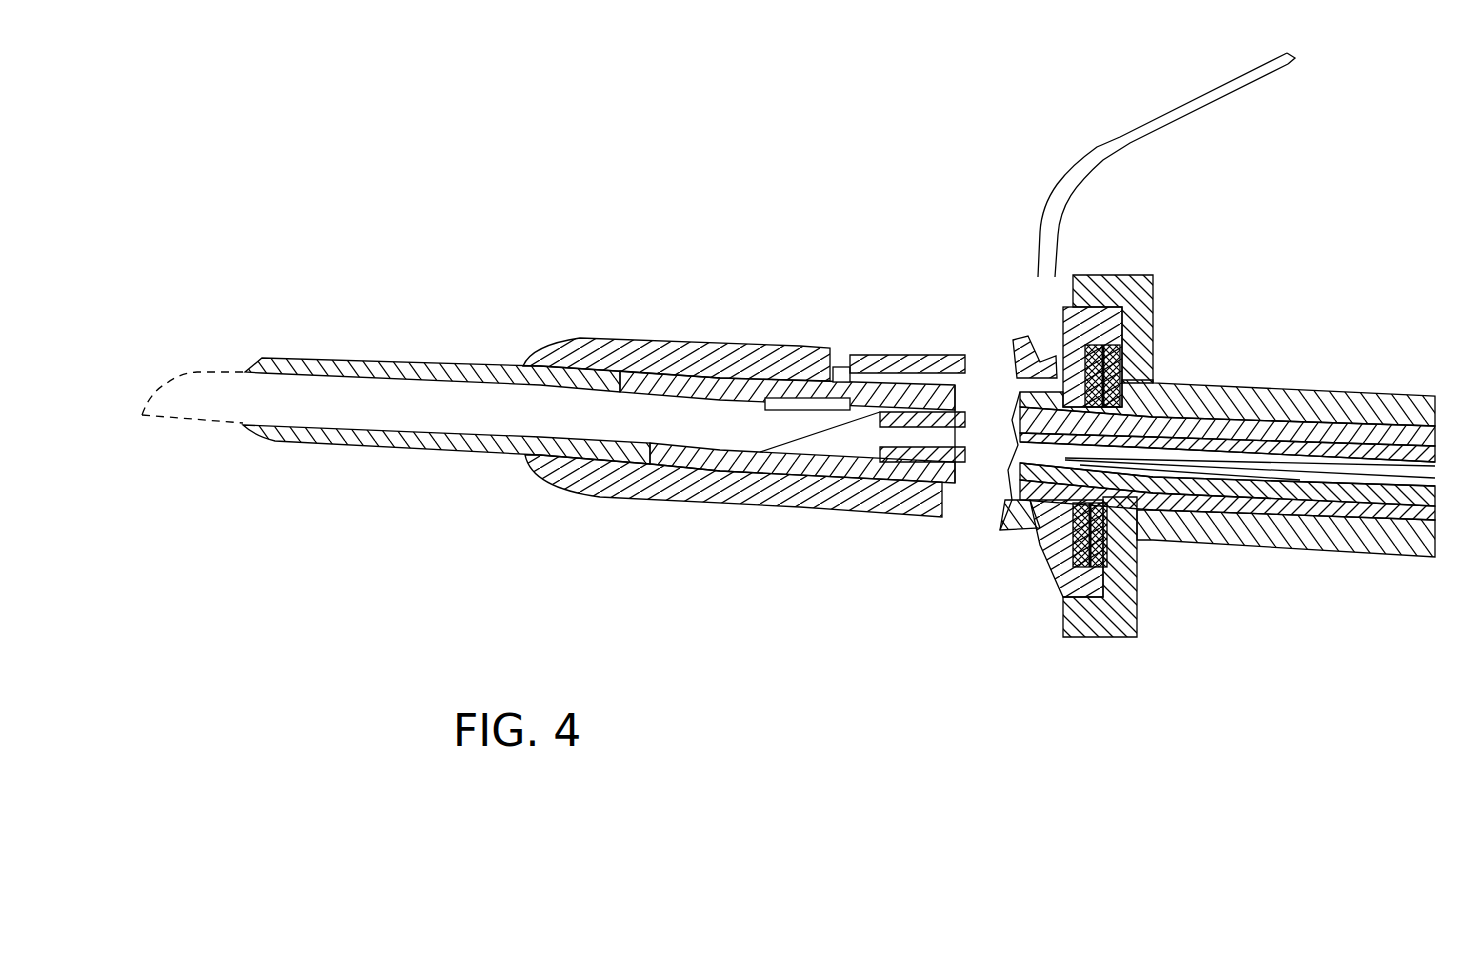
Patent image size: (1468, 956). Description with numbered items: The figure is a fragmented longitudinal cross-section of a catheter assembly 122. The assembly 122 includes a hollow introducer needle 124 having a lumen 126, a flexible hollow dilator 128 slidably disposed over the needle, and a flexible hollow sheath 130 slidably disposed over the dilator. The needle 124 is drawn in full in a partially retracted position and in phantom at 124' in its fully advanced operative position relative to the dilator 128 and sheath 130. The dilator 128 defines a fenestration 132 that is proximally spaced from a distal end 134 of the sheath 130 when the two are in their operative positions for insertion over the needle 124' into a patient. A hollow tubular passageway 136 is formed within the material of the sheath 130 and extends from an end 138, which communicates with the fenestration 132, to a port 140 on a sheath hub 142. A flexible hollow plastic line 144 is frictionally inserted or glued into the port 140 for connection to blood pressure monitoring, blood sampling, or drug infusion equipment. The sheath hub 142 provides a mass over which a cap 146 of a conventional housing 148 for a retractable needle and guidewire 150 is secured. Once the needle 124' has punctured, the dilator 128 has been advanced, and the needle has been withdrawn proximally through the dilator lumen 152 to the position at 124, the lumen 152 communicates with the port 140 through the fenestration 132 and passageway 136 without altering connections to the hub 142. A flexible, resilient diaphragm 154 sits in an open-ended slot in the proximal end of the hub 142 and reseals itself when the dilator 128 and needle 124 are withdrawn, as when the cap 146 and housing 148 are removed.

The catheter assembly 122 is at (870, 637).
The hollow introducer needle 124 is at (890, 481).
The introducer needle in fully advanced operative position 124' is at (215, 347).
The lumen 126 is at (928, 447).
The flexible hollow dilator 128 is at (330, 447).
The flexible hollow sheath 130 is at (636, 505).
The fenestration 132 is at (840, 398).
The distal end 134 is at (523, 362).
The hollow tubular passageway 136 is at (893, 354).
The end 138 is at (800, 497).
The port 140 is at (1068, 268).
The sheath hub 142 is at (1043, 338).
The flexible hollow plastic line 144 is at (1116, 140).
The cap 146 is at (1137, 600).
The housing 148 is at (1280, 388).
The guidewire 150 is at (1030, 527).
The dilator lumen 152 is at (445, 380).
The diaphragm 154 is at (1123, 360).